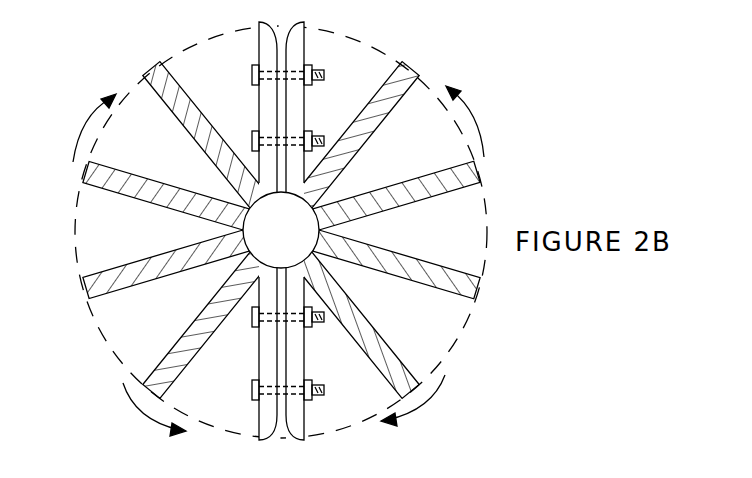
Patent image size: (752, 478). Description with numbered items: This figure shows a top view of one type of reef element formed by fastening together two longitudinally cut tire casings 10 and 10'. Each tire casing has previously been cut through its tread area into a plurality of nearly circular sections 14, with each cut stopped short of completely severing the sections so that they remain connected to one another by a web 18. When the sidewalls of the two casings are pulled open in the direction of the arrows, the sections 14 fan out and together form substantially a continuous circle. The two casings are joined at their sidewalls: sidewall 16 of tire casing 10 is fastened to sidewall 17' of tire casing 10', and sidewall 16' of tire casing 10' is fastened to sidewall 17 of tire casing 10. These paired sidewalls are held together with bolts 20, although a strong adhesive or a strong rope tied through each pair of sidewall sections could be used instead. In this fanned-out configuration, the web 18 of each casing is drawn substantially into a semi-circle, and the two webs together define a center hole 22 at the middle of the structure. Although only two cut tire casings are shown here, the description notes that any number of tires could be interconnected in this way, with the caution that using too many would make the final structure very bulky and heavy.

The tire casing 10 is at (180, 126).
The tire casing 10' is at (386, 127).
The sections 14 is at (481, 176).
The sidewall 16 is at (226, 347).
The sidewall 16' is at (345, 116).
The sidewall 17 is at (223, 116).
The sidewall 17' is at (335, 347).
The web 18 is at (252, 242).
The bolts 20 is at (250, 323).
The center hole 22 is at (301, 248).